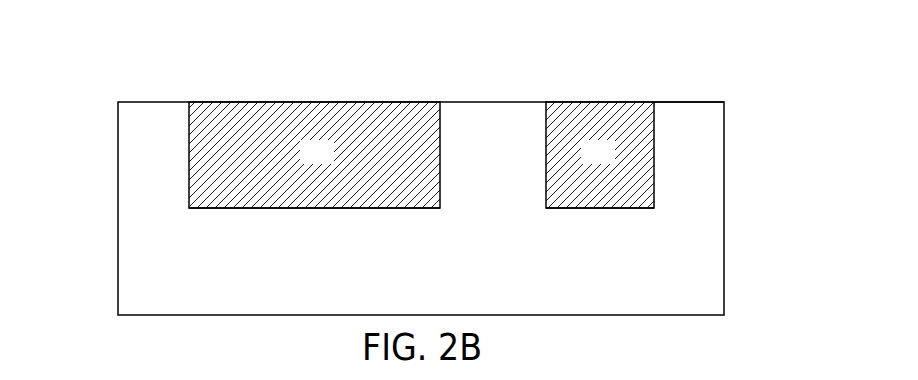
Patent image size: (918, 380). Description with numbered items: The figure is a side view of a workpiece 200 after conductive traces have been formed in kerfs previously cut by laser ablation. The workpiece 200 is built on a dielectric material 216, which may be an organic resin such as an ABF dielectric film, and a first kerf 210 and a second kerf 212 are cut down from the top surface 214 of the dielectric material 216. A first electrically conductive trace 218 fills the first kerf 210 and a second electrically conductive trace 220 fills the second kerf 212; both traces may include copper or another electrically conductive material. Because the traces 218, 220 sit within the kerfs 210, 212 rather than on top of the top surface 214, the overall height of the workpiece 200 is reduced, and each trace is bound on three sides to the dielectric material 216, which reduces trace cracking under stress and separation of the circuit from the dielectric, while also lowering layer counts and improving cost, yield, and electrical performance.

The workpiece 200 is at (382, 170).
The first kerf 210 is at (272, 74).
The second kerf 212 is at (574, 62).
The top surface 214 is at (668, 102).
The dielectric material 216 is at (438, 297).
The first electrically conductive trace 218 is at (263, 210).
The second electrically conductive trace 220 is at (573, 210).